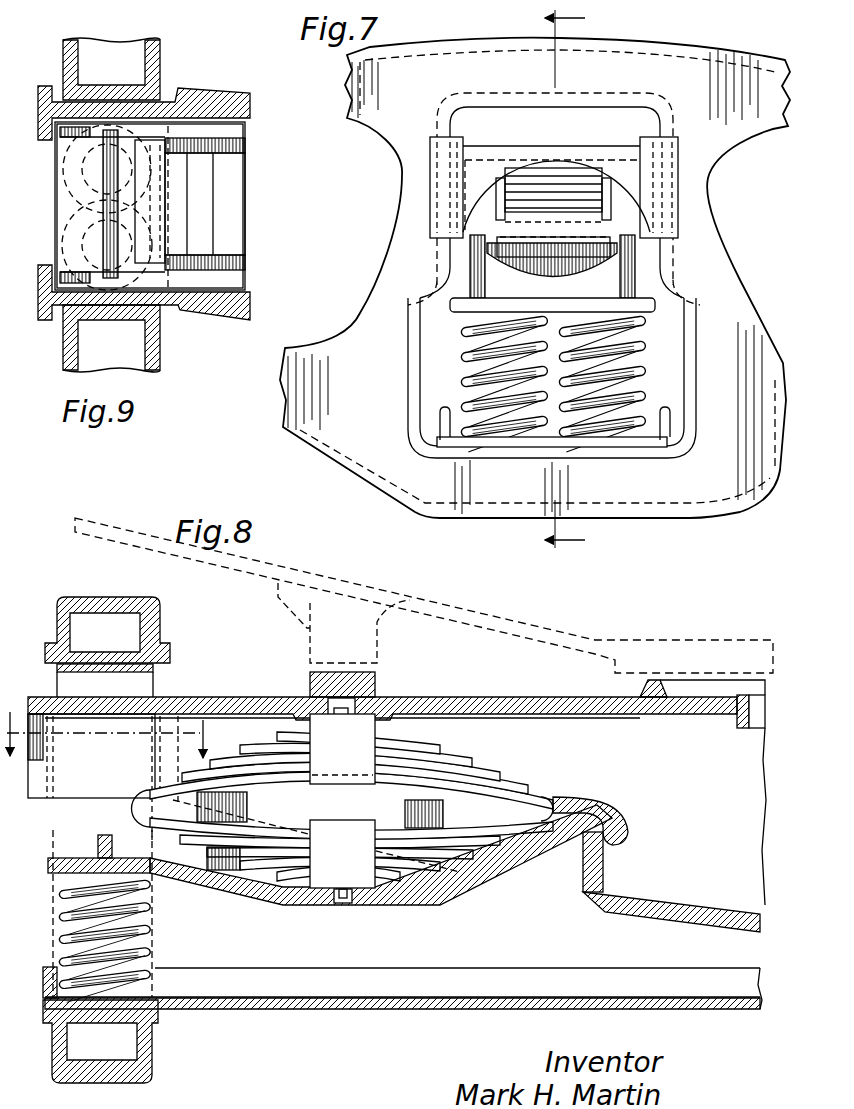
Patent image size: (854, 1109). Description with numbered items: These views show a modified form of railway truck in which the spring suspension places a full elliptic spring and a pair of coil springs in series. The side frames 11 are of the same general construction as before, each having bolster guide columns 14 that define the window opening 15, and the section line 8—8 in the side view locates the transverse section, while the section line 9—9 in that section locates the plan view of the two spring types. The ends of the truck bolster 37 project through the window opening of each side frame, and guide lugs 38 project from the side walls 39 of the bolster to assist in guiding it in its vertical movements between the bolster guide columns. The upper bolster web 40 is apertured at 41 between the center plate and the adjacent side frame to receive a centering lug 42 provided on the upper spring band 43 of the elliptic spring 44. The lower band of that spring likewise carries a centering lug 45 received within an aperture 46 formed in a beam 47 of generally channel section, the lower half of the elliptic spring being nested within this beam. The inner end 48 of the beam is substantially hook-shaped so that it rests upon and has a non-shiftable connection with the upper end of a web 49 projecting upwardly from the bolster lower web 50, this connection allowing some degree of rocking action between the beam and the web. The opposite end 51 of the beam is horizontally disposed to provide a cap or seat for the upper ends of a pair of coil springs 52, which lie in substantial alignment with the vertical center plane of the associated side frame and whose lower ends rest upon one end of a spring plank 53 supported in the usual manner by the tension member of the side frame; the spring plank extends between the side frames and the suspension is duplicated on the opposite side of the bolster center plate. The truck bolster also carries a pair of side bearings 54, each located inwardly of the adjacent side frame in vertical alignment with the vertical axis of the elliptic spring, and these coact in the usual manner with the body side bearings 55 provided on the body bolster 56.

In FIG. 7, the section line 8— 8 is at (572, 281).
In FIG. 8, the section line 9— 9 is at (111, 725).
In FIG. 7, the side frame 11 is at (683, 42).
In FIG. 8, the side frame 11 is at (160, 628).
In FIG. 9, the bolster guide column 14 is at (62, 62).
In FIG. 7, the window opening 15 is at (680, 316).
In FIG. 7, the truck bolster 37 is at (524, 134).
In FIG. 8, the truck bolster 37 is at (229, 690).
In FIG. 9, the guide lug 38 is at (72, 100).
In FIG. 7, the guide lug 38 is at (667, 158).
In FIG. 8, the guide lug 38 is at (173, 727).
In FIG. 9, the side wall 39 is at (114, 108).
In FIG. 8, the side wall 39 is at (67, 786).
In FIG. 8, the upper bolster web 40 is at (506, 706).
In FIG. 8, the aperture 41 is at (350, 713).
In FIG. 8, the centering lug 42 is at (353, 705).
In FIG. 8, the upper spring band 43 is at (363, 757).
In FIG. 9, the elliptic spring 44 is at (235, 195).
In FIG. 7, the elliptic spring 44 is at (568, 193).
In FIG. 8, the elliptic spring 44 is at (483, 773).
In FIG. 8, the centering lug 45 is at (337, 903).
In FIG. 8, the aperture 46 is at (352, 903).
In FIG. 9, the beam 47 is at (167, 143).
In FIG. 8, the beam 47 is at (438, 898).
In FIG. 8, the inner end 48 is at (607, 820).
In FIG. 8, the web 49 is at (605, 862).
In FIG. 8, the bolster lower web 50 is at (663, 912).
In FIG. 9, the opposite end 51 is at (62, 172).
In FIG. 7, the opposite end 51 is at (457, 300).
In FIG. 8, the opposite end 51 is at (50, 865).
In FIG. 9, the coil springs 52 is at (80, 220).
In FIG. 7, the coil springs 52 is at (462, 377).
In FIG. 8, the coil springs 52 is at (62, 915).
In FIG. 7, the spring plank 53 is at (667, 437).
In FIG. 8, the spring plank 53 is at (45, 982).
In FIG. 8, the side bearing 54 is at (310, 672).
In FIG. 8, the body side bearing 55 is at (302, 627).
In FIG. 8, the body bolster 56 is at (390, 594).